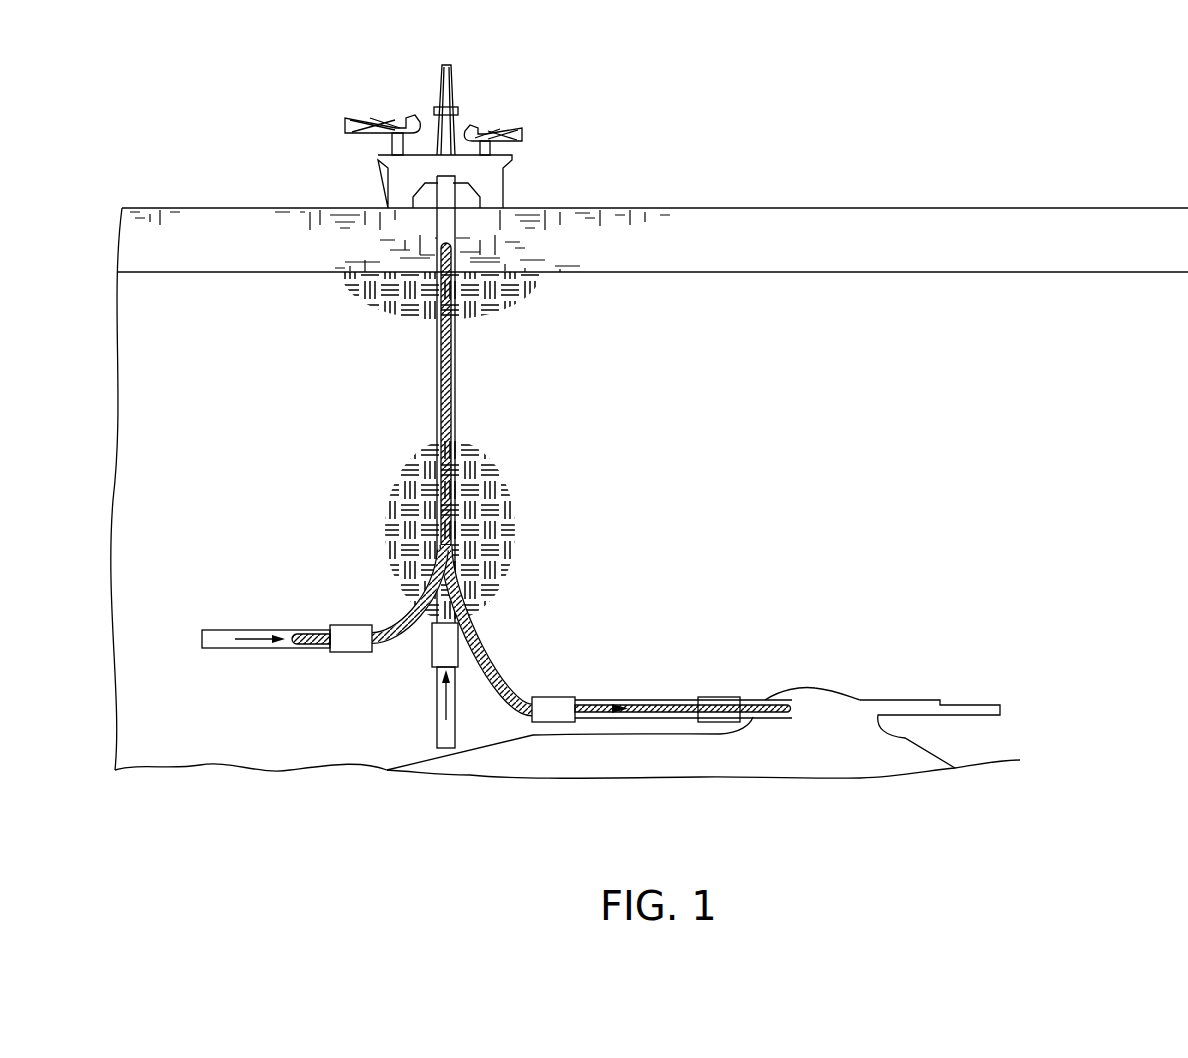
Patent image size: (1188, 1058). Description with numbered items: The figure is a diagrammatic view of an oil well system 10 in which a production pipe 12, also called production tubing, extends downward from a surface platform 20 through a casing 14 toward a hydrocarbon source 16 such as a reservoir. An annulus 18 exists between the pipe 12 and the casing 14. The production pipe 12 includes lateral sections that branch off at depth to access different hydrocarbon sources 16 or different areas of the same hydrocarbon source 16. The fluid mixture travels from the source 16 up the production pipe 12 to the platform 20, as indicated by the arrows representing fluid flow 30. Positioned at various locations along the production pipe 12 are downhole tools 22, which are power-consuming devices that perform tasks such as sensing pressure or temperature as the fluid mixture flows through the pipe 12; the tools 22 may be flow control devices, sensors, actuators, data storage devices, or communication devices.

The oil well system 10 is at (488, 237).
The production pipe 12 is at (452, 405).
The casing 14 is at (436, 342).
The hydrocarbon source 16 is at (862, 757).
The annulus 18 is at (453, 333).
The platform 20 is at (378, 157).
The tool 22 is at (350, 638).
The fluid flow 30 is at (250, 642).